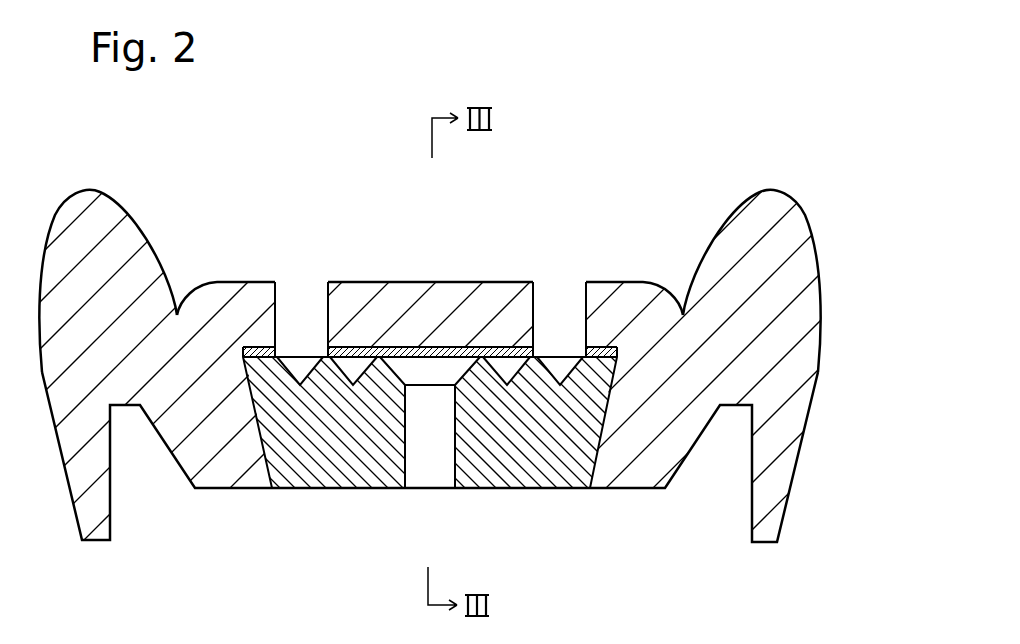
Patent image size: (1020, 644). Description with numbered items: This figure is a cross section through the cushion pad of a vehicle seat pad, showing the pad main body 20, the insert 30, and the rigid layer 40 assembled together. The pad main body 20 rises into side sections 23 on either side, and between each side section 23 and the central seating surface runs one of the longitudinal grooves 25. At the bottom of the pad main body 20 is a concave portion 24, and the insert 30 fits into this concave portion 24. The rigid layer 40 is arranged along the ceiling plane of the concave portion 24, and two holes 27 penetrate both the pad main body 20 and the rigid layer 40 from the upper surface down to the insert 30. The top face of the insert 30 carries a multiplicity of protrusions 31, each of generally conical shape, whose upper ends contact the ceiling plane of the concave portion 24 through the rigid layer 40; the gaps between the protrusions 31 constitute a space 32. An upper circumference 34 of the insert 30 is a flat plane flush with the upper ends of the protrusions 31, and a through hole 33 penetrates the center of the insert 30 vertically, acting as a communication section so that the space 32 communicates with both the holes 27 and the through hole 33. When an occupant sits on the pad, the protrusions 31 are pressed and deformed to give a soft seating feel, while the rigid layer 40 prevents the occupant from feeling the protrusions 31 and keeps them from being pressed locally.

The pad main body 20 is at (664, 136).
The side sections 23 is at (142, 232).
The concave portion 24 is at (567, 490).
The grooves in a longitudinal direction 25 is at (180, 291).
The holes 27 is at (305, 300).
The insert 30 is at (300, 490).
The protrusions 31 is at (386, 348).
The space 32 is at (497, 367).
The through hole 33 is at (425, 490).
The upper circumference 34 is at (243, 351).
The rigid layer 40 is at (352, 346).